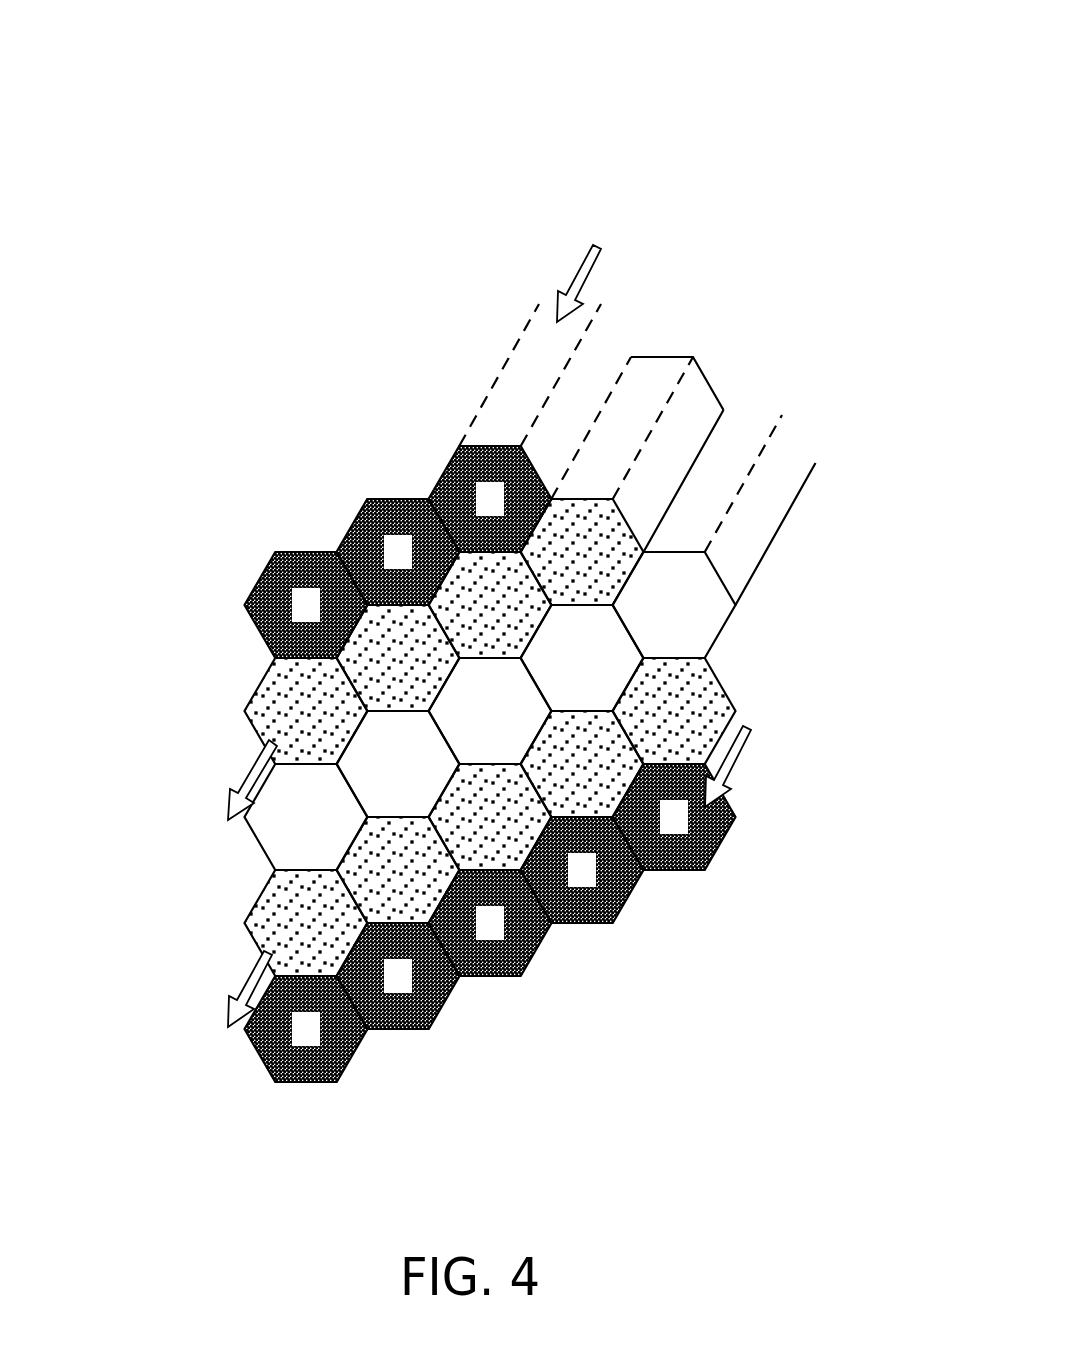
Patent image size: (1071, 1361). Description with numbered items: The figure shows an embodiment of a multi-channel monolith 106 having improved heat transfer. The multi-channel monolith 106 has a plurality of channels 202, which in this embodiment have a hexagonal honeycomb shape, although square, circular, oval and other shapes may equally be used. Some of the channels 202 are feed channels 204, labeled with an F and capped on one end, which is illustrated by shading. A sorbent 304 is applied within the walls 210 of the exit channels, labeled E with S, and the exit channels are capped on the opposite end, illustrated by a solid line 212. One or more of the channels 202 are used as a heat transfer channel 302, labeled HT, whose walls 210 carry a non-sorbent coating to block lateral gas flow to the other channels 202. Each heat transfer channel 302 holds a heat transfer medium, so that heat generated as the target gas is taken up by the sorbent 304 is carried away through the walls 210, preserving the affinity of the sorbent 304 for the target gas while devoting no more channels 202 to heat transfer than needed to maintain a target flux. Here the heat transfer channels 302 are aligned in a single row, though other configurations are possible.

The multi-channel monolith 106 is at (798, 46).
The channels 202 is at (265, 563).
The feed channels 204 is at (285, 607).
The walls 210 is at (705, 443).
The solid line 212 is at (662, 357).
The heat transfer channel 302 is at (279, 805).
The sorbent 304 is at (288, 680).